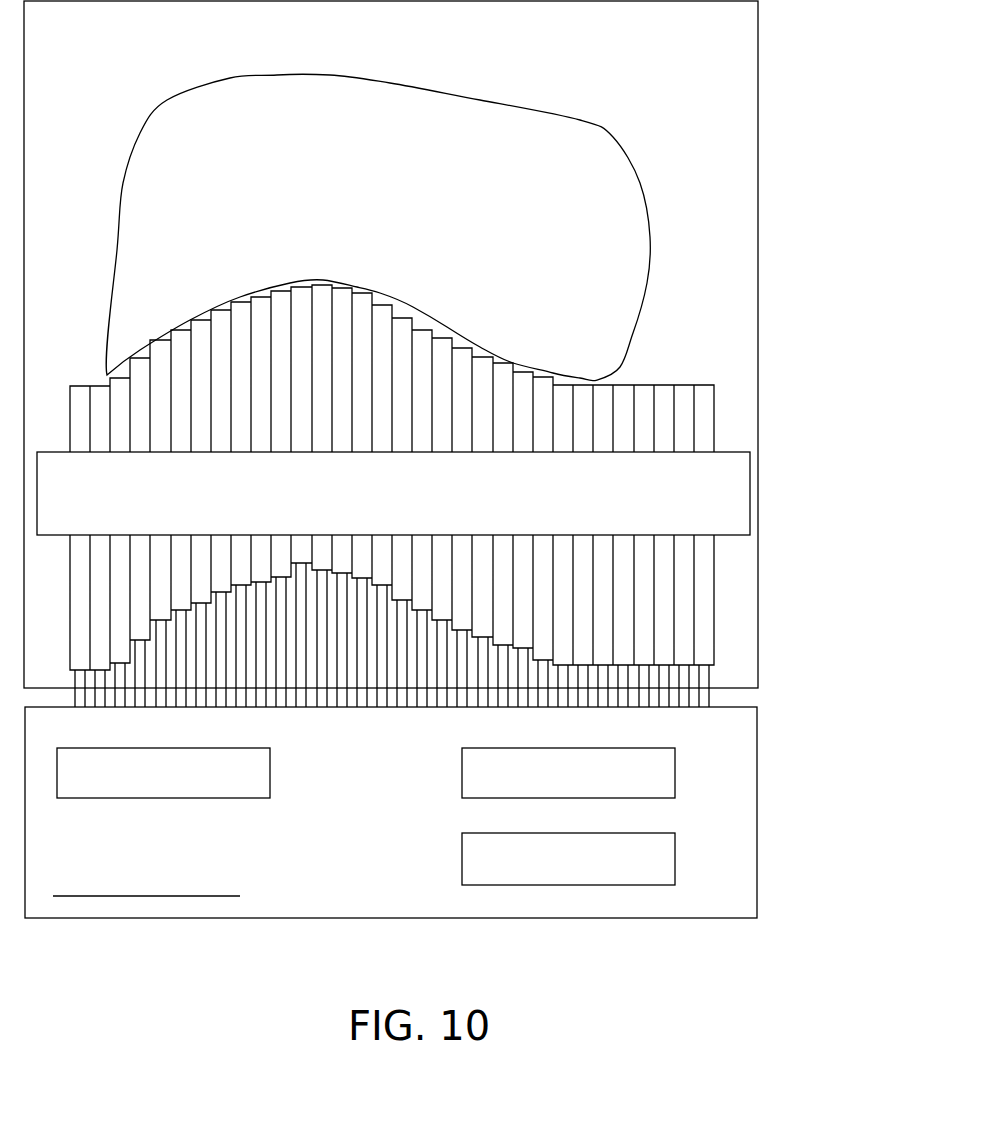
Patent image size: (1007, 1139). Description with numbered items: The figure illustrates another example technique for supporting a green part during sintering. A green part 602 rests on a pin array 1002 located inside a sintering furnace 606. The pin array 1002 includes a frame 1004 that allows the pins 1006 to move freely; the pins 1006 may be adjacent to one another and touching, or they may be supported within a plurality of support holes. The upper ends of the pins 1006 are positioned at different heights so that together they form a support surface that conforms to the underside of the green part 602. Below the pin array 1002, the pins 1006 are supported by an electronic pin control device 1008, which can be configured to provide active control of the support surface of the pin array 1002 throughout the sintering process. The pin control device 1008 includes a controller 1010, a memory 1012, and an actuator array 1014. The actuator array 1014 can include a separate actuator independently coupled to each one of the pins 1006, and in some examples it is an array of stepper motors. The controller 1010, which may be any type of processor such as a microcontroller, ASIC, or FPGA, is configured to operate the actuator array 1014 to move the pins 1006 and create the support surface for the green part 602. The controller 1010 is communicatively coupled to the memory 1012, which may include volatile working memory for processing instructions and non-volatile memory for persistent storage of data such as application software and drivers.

The green part 602 is at (416, 194).
The sintering furnace 606 is at (758, 88).
The pin array 1002 is at (459, 483).
The frame 1004 is at (424, 506).
The pins 1006 is at (703, 614).
The electronic pin control device 1008 is at (622, 918).
The controller 1010 is at (675, 773).
The memory 1012 is at (675, 858).
The actuator array 1014 is at (220, 798).